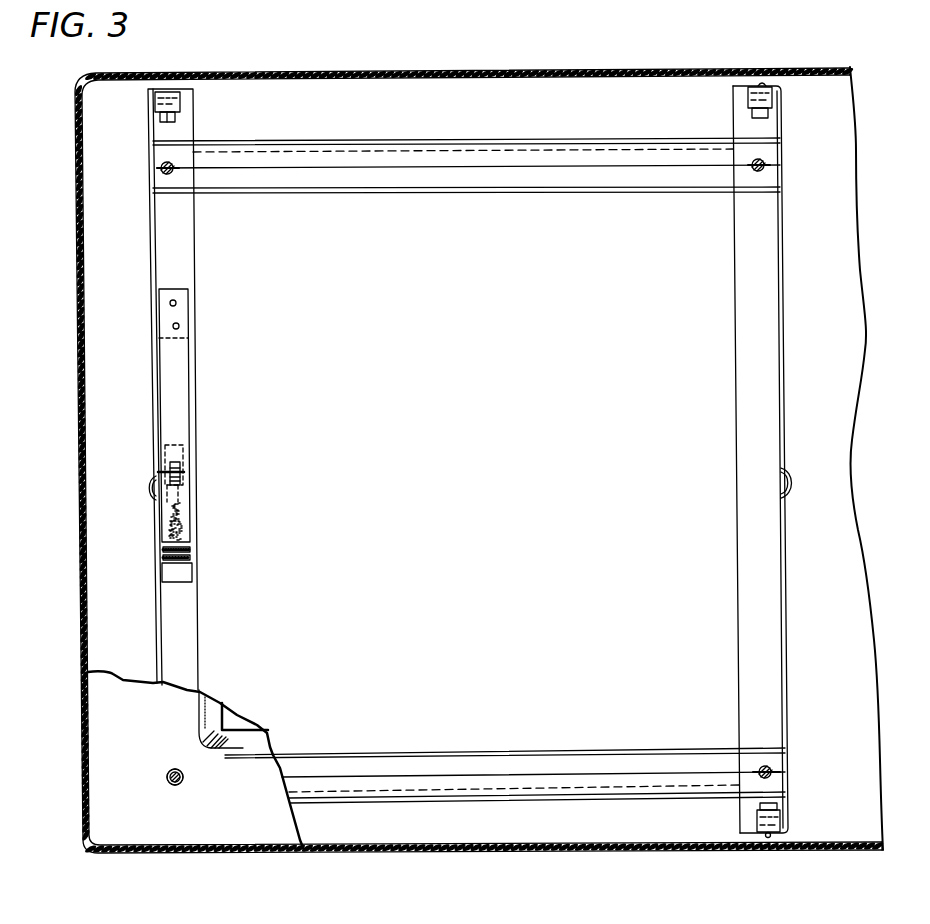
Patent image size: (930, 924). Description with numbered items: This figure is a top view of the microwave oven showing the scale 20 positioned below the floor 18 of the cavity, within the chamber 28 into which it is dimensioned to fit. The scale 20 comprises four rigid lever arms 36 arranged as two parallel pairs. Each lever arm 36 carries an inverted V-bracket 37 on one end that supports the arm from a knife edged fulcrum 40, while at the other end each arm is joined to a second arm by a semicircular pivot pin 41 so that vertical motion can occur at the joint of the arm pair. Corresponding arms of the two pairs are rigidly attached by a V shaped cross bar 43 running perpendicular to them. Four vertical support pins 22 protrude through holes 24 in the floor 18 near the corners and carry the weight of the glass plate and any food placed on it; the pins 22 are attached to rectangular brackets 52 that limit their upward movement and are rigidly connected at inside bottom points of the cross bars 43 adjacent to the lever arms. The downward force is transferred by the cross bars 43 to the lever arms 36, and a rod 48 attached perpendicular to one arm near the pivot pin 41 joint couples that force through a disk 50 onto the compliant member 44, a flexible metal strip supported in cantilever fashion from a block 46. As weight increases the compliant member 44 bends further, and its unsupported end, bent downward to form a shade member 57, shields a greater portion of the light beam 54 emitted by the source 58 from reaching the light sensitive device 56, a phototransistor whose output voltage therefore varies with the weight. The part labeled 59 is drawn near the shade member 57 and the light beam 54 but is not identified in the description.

The panel wall 18 is at (113, 680).
The frame assembly 20 is at (144, 248).
The fastener 22 is at (765, 160).
The mounting hole 24 is at (175, 769).
The housing interior 28 is at (101, 611).
The frame member 36 is at (157, 273).
The connector block 37 is at (181, 98).
The connector tab 40 is at (174, 121).
The handle 41 is at (150, 488).
The cross rail 43 is at (387, 193).
The mounting plate 44 is at (197, 388).
The plate upper section 46 is at (190, 312).
The valve body 48 is at (184, 472).
The pin 50 is at (177, 463).
The knob 52 is at (173, 174).
The filter strip 54 is at (190, 557).
The collector box 56 is at (190, 573).
The granular material 57 is at (192, 540).
The hopper outline 58 is at (163, 450).
The screen 59 is at (162, 553).